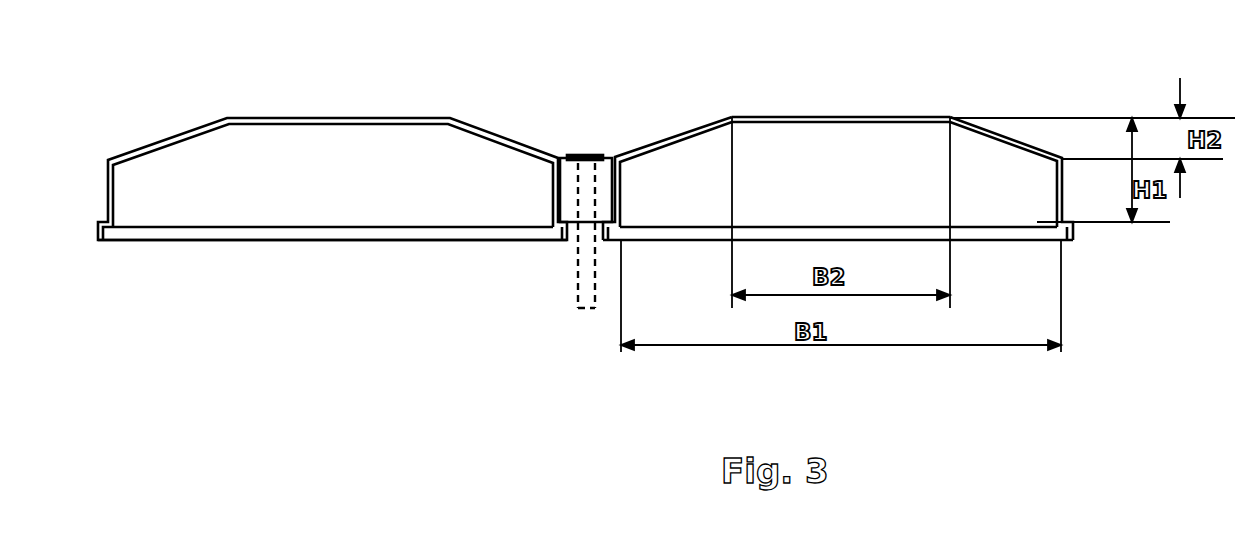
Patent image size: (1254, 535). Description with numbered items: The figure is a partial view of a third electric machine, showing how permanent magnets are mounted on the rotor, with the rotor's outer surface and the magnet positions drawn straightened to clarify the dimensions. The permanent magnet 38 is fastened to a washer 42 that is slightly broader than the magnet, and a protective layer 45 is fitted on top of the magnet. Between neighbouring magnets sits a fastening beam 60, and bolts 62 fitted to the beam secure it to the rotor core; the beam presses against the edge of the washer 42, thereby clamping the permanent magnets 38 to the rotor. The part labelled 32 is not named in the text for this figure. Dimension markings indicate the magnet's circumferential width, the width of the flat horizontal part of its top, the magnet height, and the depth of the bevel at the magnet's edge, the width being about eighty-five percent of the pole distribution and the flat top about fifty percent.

The profile body 32 is at (516, 321).
The permanent magnet 38 is at (830, 173).
The washer 42 is at (878, 238).
The protective layer 45 is at (760, 119).
The fastening beam 60 is at (605, 162).
The bolts 62 is at (583, 162).